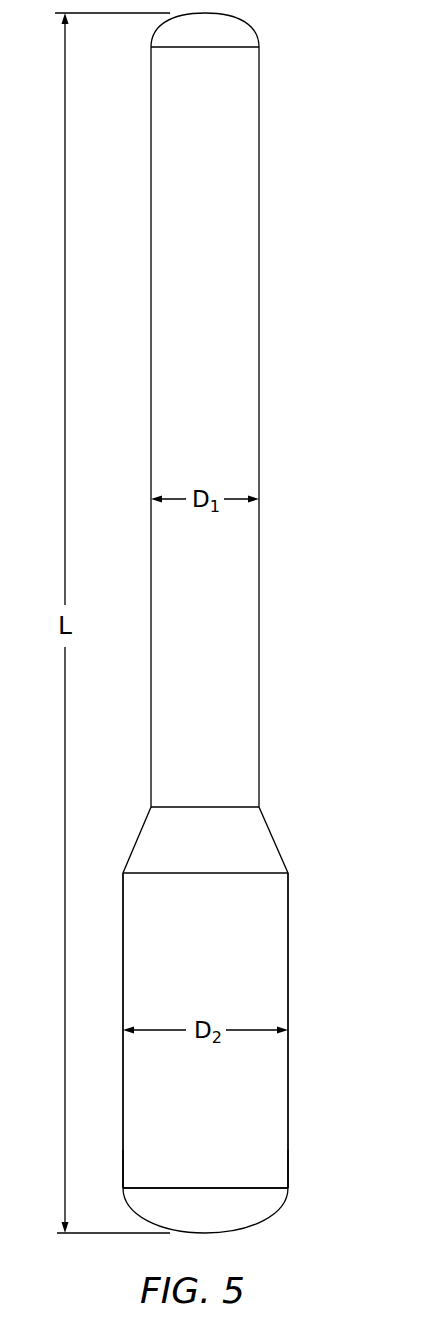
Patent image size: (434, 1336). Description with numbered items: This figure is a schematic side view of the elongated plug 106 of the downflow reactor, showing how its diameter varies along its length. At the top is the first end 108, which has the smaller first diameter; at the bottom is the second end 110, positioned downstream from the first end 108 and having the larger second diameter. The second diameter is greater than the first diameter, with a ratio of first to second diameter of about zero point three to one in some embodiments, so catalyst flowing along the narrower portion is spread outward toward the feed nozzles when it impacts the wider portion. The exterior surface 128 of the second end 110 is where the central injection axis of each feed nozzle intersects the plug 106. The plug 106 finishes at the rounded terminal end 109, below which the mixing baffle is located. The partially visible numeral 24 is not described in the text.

The elongated plug 106 is at (304, 384).
The first end 108 is at (271, 50).
The exterior surface 128 is at (290, 935).
The second end 110 is at (298, 1160).
The terminal end 109 is at (237, 1231).
The adjacent component (partial) 24 is at (423, 972).